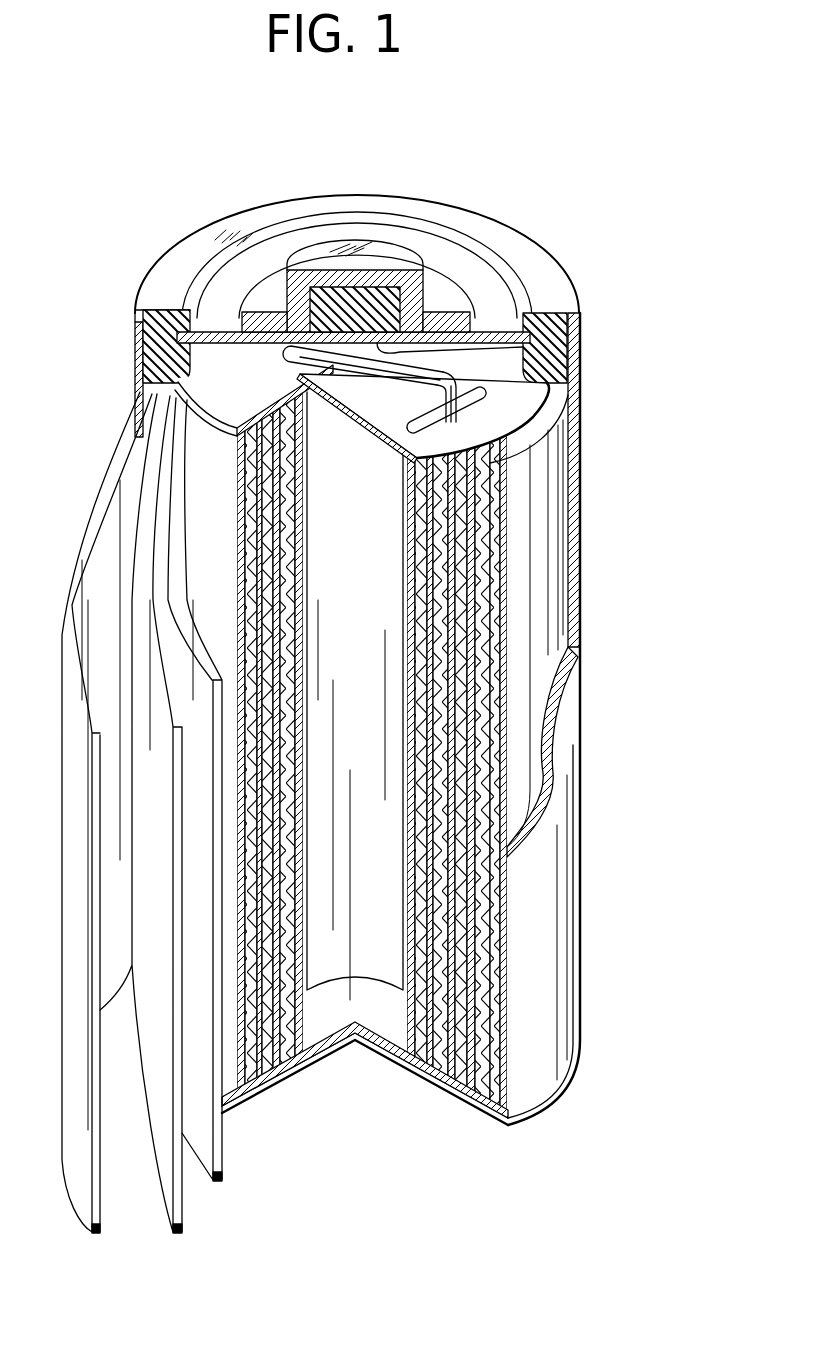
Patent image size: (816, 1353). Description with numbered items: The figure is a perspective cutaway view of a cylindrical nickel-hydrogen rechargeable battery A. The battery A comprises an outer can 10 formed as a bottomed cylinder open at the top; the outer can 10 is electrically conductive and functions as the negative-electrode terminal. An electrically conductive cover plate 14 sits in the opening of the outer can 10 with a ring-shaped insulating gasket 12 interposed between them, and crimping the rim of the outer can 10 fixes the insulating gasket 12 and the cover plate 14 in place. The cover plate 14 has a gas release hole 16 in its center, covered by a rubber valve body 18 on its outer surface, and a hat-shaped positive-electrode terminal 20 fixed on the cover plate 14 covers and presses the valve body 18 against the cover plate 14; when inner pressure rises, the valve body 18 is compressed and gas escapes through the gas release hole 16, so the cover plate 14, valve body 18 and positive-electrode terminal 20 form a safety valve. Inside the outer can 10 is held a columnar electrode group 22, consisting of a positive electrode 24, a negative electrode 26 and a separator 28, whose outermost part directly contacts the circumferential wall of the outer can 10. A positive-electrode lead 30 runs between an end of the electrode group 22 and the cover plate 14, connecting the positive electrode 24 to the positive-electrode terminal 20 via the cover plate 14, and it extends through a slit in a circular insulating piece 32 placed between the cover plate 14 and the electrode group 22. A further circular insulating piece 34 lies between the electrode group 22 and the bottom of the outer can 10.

The outer can 10 is at (568, 705).
The insulating gasket 12 is at (150, 346).
The cover plate 14 is at (497, 317).
The gas release hole 16 is at (560, 343).
The valve body 18 is at (325, 300).
The positive-electrode terminal 20 is at (378, 242).
The electrode group 22 is at (558, 590).
The positive electrode 24 is at (222, 1170).
The negative electrode 26 is at (100, 1222).
The separator 28 is at (182, 1215).
The positive-electrode lead 30 is at (463, 385).
The insulating piece 32 is at (488, 414).
The insulating piece 34 is at (378, 1015).
The battery A is at (566, 203).